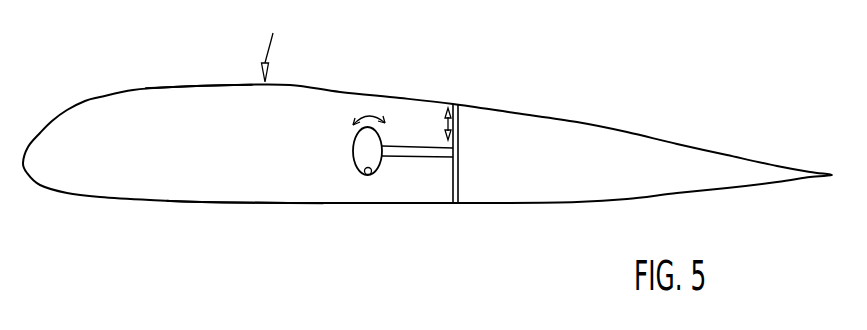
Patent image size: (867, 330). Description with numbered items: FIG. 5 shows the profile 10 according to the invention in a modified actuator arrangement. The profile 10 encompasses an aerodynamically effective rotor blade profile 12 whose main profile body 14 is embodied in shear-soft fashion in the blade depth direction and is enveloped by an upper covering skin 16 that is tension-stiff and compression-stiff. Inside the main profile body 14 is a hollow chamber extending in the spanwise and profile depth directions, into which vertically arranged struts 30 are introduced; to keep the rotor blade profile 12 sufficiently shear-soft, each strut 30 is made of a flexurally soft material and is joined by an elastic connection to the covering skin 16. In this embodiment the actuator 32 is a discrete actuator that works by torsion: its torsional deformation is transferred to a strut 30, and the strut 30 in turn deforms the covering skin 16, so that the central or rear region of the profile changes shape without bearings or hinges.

The profile 10 is at (70, 49).
The rotor blade profile 12 is at (279, 46).
The main profile body 14 is at (173, 88).
The upper covering skin 16 is at (203, 203).
The strut 30 is at (458, 125).
The actuator 32 is at (370, 173).